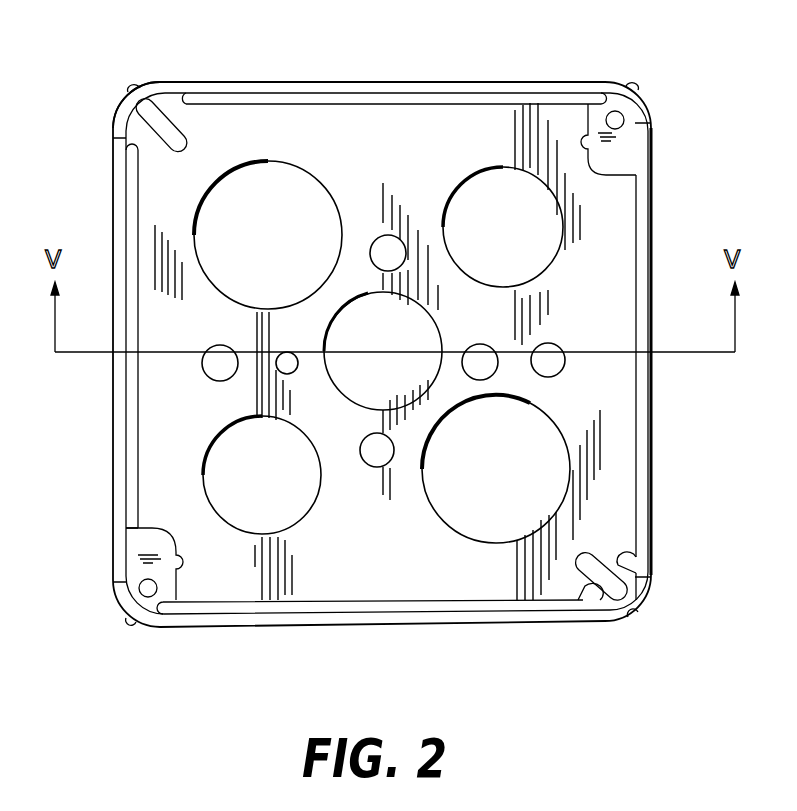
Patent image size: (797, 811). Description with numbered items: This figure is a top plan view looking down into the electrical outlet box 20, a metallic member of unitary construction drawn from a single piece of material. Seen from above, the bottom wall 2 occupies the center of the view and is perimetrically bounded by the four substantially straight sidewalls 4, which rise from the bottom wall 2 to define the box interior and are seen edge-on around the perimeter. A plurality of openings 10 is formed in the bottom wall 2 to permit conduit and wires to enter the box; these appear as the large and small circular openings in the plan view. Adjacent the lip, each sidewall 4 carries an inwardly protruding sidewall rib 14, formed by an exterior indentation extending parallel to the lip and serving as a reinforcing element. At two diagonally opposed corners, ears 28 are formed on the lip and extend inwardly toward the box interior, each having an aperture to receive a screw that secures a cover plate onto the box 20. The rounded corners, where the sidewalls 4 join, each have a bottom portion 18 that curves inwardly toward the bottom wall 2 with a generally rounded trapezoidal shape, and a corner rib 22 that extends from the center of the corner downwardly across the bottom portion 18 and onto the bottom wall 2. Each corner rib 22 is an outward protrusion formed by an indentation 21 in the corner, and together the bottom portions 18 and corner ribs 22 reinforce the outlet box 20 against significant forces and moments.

The electrical outlet box 20 is at (184, 61).
The bottom wall 2 is at (408, 130).
The sidewall 4 is at (113, 458).
The opening 10 is at (223, 230).
The sidewall rib 14 is at (140, 409).
The bottom portion 18 is at (174, 111).
The indentation 21 is at (143, 121).
The corner rib 22 is at (135, 621).
The ear 28 is at (610, 155).